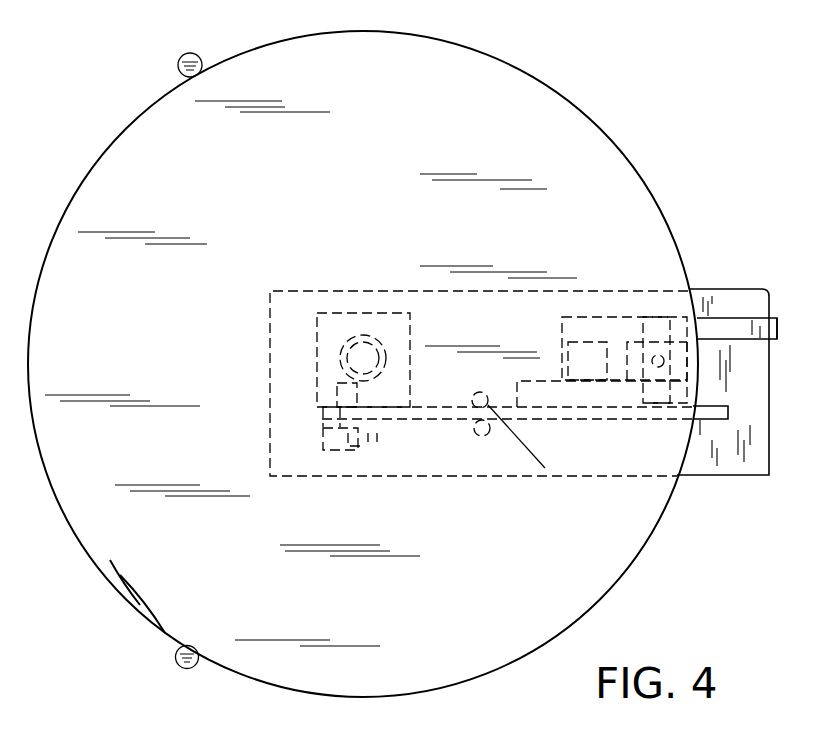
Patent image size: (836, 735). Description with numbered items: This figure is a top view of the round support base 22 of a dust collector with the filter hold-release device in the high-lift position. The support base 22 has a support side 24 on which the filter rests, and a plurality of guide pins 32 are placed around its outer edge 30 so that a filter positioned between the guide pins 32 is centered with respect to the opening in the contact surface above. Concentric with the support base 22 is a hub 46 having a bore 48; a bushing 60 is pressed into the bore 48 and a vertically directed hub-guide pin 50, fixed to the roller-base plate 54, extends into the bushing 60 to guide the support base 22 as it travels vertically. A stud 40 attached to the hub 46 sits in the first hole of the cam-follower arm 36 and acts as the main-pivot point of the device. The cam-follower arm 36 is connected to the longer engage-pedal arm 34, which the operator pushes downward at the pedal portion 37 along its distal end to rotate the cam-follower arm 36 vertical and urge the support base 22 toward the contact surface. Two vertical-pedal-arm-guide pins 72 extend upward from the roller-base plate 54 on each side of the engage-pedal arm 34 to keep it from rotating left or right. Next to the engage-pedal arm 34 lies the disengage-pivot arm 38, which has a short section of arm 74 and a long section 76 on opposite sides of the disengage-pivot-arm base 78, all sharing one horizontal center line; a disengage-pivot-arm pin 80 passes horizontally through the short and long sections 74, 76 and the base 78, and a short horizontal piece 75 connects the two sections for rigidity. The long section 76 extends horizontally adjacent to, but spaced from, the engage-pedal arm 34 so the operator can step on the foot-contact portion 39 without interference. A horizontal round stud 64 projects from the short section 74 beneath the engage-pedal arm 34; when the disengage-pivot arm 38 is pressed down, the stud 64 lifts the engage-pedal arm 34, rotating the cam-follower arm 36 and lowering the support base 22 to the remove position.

The support base 22 is at (263, 680).
The support side 24 is at (152, 582).
The outer edge 30 is at (146, 618).
The guide pins 32 is at (193, 53).
The engage-pedal arm 34 is at (712, 419).
The cam-follower arm 36 is at (325, 428).
The pedal portion 37 is at (728, 412).
The disengage-pivot arm 38 is at (545, 345).
The foot-contact portion 39 is at (778, 325).
The stud 40 is at (338, 450).
The hub 46 is at (327, 357).
The bore 48 is at (352, 343).
The hub-guide pin 50 is at (348, 373).
The roller-base plate 54 is at (747, 463).
The bushing 60 is at (376, 372).
The horizontal stud 64 is at (530, 425).
The vertical-pedal-arm-guide pins 72 is at (484, 436).
The short section of arm 74 is at (585, 395).
The short horizontal piece 75 is at (588, 347).
The long section 76 is at (717, 327).
The disengage-pivot-arm base 78 is at (680, 365).
The disengage-pivot-arm pin 80 is at (657, 317).